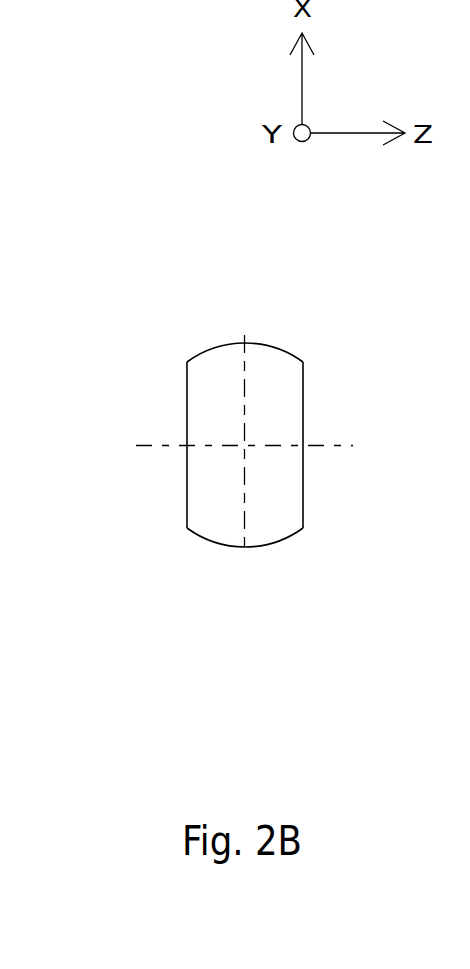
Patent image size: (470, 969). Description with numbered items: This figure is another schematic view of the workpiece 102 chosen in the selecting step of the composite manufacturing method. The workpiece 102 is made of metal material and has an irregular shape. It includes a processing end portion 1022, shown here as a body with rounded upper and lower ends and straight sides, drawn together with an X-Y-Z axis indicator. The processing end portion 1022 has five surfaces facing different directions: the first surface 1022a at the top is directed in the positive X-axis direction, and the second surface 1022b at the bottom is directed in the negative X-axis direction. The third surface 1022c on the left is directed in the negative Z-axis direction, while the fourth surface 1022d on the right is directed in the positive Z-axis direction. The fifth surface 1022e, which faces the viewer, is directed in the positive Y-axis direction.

The workpiece 102 is at (112, 172).
The processing end portion 1022 is at (318, 298).
The first surface 1022a is at (218, 343).
The second surface 1022b is at (270, 543).
The third surface 1022c is at (187, 478).
The fourth surface 1022d is at (303, 478).
The fifth surface 1022e is at (285, 398).